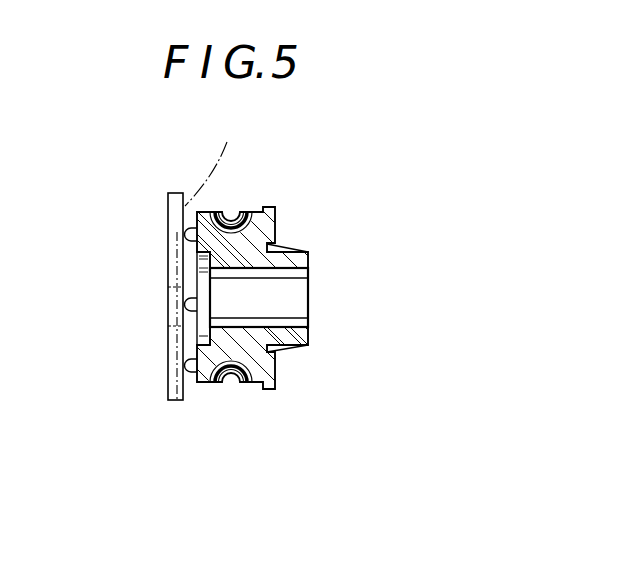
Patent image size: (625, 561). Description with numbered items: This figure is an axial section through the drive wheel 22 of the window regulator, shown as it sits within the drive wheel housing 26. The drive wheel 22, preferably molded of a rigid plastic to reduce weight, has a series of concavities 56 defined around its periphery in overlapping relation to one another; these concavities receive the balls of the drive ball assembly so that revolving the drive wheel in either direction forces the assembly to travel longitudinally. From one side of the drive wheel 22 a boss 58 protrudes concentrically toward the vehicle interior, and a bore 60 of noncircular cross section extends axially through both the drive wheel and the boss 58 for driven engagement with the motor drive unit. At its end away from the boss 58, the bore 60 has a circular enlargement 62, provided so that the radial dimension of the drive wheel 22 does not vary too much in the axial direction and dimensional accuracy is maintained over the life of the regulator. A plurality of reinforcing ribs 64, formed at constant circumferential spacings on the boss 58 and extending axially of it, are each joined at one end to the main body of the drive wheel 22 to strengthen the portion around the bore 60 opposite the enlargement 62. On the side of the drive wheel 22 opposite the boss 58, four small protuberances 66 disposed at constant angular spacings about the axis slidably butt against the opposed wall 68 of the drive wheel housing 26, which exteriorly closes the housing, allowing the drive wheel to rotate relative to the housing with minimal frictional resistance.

The drive wheel 22 is at (237, 337).
The drive wheel housing 26 is at (173, 182).
The concavities 56 is at (245, 226).
The boss 58 is at (300, 348).
The bore 60 is at (309, 285).
The circular enlargement 62 is at (200, 334).
The reinforcing ribs 64 is at (278, 251).
The small protuberances 66 is at (186, 299).
The wall 68 is at (216, 163).